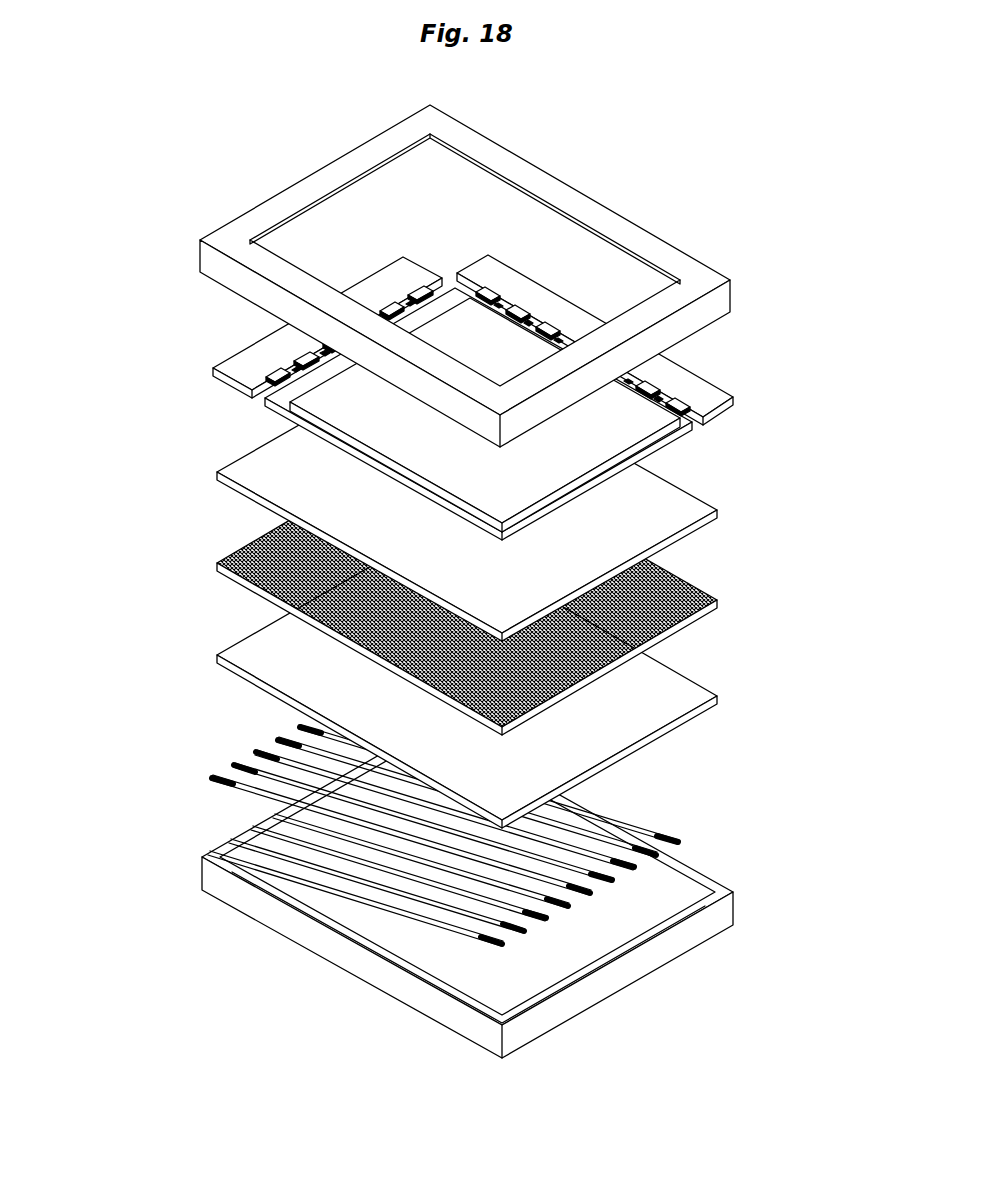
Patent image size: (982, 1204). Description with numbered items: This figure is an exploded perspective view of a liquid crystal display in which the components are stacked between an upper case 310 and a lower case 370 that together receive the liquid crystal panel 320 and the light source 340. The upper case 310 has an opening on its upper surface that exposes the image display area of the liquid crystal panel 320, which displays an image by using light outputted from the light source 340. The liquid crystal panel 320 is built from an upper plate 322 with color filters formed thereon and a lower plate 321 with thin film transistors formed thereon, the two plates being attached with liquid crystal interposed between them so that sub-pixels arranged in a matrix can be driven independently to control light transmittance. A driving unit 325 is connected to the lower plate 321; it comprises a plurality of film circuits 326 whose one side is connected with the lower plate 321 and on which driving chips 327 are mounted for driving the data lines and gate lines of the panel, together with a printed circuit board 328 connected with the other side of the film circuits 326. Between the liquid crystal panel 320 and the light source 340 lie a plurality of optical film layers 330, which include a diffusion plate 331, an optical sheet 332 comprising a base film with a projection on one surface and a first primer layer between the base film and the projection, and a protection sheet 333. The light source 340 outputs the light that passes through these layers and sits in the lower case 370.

The upper case 310 is at (695, 318).
The liquid crystal panel 320 is at (589, 414).
The lower plate 321 is at (632, 432).
The upper plate 322 is at (637, 462).
The driving unit 325 is at (374, 356).
The film circuits 326 is at (262, 396).
The driving chips 327 is at (258, 372).
The printed circuit board 328 is at (262, 346).
The optical film layers 330 is at (565, 588).
The diffusion plate 331 is at (648, 705).
The optical sheet 332 is at (693, 617).
The protection sheet 333 is at (530, 495).
The light source 340 is at (335, 855).
The lower case 370 is at (652, 955).